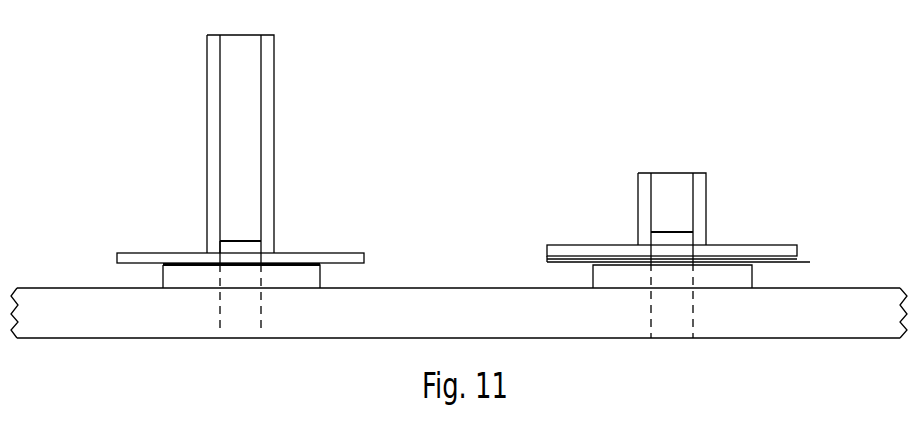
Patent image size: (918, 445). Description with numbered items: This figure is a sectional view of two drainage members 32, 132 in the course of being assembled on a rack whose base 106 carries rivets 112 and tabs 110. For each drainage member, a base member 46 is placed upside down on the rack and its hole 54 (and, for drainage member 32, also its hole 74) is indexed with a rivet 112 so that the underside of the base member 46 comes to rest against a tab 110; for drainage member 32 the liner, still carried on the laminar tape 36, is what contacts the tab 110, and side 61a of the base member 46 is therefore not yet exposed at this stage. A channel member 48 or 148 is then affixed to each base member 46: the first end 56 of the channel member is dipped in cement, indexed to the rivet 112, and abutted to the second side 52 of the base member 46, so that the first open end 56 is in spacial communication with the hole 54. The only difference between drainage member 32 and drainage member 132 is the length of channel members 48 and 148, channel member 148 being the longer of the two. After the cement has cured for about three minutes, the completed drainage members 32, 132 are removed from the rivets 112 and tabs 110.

The base/substrate 106 is at (438, 295).
The drainage member 132 is at (183, 131).
The channel member 148 is at (212, 71).
The rivet 112 is at (247, 239).
The first end 56 is at (223, 242).
The base member 46 is at (117, 262).
The hole 54 is at (220, 258).
The tab 110 is at (313, 276).
The second side 52 is at (145, 263).
The drainage member 32 is at (718, 182).
The channel member 48 is at (643, 193).
The laminar tape 36 is at (810, 261).
The side 61a is at (572, 262).
The hole 74 is at (650, 263).